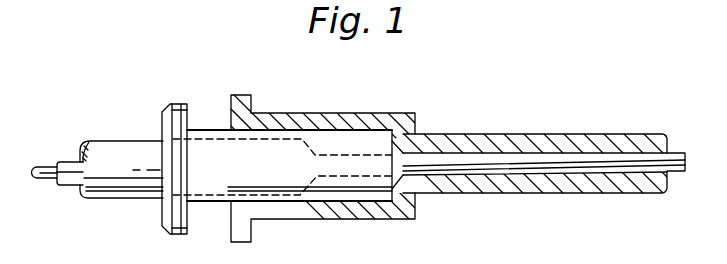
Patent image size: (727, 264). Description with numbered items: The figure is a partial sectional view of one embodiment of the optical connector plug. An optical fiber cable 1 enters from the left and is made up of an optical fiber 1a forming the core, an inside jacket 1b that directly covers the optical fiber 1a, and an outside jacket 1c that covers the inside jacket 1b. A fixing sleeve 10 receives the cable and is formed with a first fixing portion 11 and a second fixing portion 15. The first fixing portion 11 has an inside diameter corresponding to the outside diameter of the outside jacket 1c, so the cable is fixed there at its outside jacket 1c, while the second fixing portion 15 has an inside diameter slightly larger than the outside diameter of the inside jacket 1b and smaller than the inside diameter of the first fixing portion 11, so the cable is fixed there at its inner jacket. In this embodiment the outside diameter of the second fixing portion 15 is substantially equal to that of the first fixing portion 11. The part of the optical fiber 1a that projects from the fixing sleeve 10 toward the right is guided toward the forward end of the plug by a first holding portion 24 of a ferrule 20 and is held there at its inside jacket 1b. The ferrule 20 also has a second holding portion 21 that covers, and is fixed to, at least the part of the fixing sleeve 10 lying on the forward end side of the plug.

The optical fiber cable 1 is at (138, 138).
The optical fiber 1a is at (40, 166).
The inside jacket 1b is at (68, 161).
The outside jacket 1c is at (105, 140).
The fixing sleeve 10 is at (291, 127).
The first fixing portion 11 is at (210, 129).
The second fixing portion 15 is at (371, 138).
The ferrule 20 is at (552, 136).
The second holding portion 21 is at (344, 112).
The first holding portion 24 is at (592, 140).